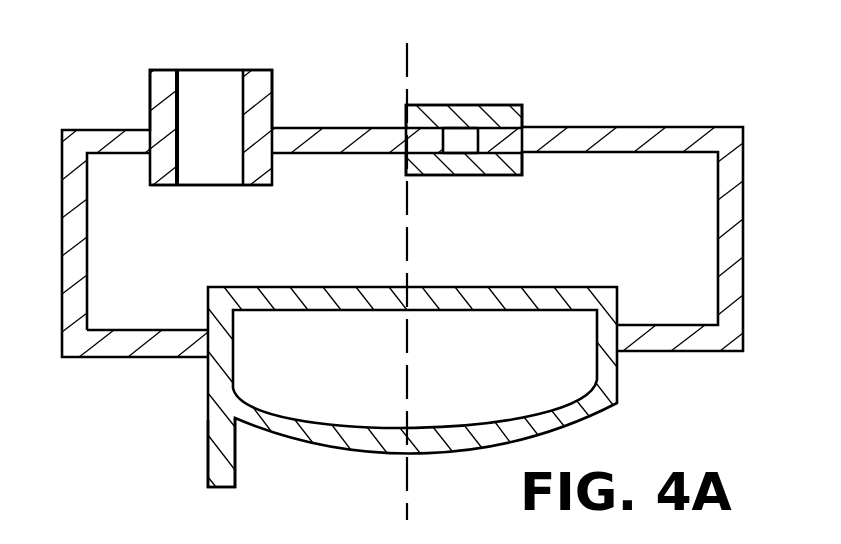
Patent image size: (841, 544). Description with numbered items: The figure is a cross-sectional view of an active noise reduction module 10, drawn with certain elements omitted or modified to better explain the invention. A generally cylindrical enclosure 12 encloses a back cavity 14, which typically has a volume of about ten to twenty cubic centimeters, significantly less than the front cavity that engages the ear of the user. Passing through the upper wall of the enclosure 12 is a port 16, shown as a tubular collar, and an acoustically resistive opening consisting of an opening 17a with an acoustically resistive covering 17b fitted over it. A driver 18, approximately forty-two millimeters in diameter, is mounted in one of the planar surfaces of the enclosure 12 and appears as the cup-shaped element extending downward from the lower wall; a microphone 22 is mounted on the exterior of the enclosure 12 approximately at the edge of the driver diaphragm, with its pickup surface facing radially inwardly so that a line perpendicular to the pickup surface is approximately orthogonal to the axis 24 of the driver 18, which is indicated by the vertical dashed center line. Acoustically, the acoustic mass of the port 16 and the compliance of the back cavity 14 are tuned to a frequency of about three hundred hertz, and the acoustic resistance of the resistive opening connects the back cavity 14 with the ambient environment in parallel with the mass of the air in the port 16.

The active noise reduction module 10 is at (760, 82).
The enclosure 12 is at (98, 128).
The back cavity 14 is at (640, 173).
The port 16 is at (212, 75).
The opening 17a is at (465, 138).
The acoustically resistive covering 17b is at (428, 103).
The driver 18 is at (371, 455).
The microphone 22 is at (210, 477).
The axis 24 is at (413, 472).